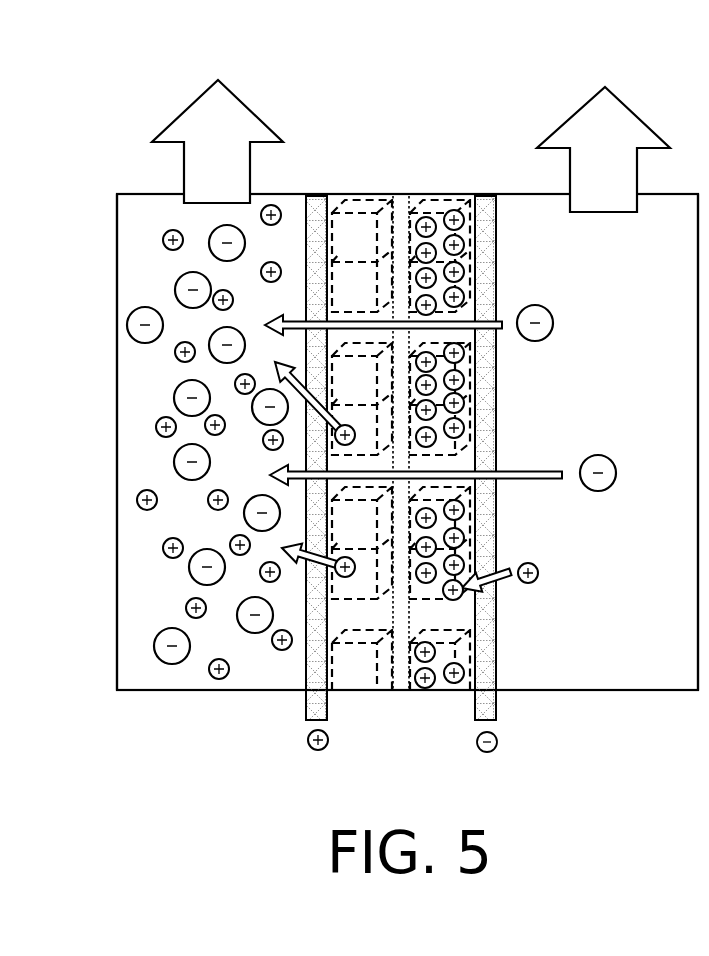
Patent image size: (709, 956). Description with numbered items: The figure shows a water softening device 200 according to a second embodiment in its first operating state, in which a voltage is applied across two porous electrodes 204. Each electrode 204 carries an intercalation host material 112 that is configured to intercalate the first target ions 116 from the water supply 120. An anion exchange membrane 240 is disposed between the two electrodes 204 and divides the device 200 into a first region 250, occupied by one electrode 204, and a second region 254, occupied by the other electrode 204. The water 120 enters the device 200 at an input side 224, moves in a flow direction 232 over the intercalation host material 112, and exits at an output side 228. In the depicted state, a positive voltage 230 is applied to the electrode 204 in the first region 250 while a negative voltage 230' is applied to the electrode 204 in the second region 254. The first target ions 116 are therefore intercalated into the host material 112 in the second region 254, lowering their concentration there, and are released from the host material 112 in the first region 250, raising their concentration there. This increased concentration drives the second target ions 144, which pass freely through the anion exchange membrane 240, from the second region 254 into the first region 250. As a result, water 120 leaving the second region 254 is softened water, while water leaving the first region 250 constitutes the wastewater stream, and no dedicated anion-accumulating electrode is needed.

The device 200 is at (76, 242).
The output side 228 is at (143, 191).
The flow direction 232 is at (167, 125).
The porous electrodes 204 is at (314, 195).
The intercalation host material 112 is at (439, 211).
The water supply 120 is at (676, 276).
The second target ions 144 is at (145, 343).
The first region 250 is at (143, 613).
The positive voltage 230 is at (264, 755).
The negative voltage 230' is at (521, 766).
The anion exchange membrane 240 is at (400, 695).
The first target ions 116 is at (443, 690).
The input side 224 is at (591, 693).
The second region 254 is at (665, 665).